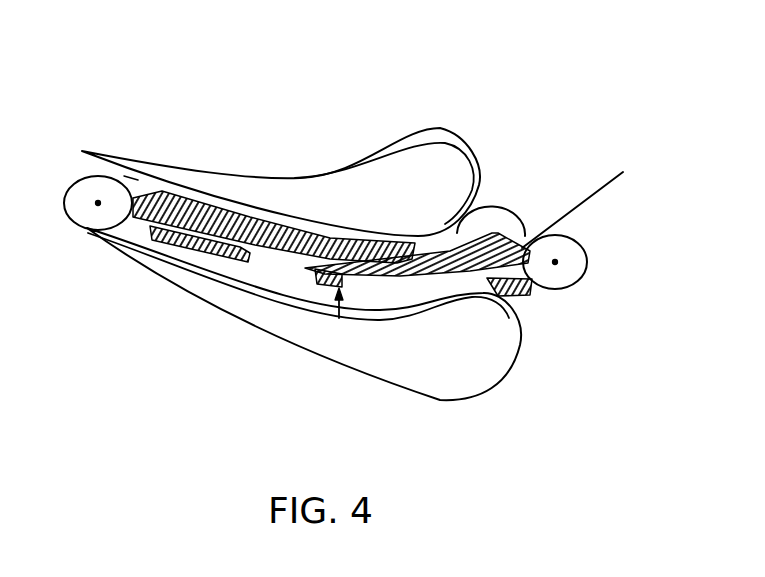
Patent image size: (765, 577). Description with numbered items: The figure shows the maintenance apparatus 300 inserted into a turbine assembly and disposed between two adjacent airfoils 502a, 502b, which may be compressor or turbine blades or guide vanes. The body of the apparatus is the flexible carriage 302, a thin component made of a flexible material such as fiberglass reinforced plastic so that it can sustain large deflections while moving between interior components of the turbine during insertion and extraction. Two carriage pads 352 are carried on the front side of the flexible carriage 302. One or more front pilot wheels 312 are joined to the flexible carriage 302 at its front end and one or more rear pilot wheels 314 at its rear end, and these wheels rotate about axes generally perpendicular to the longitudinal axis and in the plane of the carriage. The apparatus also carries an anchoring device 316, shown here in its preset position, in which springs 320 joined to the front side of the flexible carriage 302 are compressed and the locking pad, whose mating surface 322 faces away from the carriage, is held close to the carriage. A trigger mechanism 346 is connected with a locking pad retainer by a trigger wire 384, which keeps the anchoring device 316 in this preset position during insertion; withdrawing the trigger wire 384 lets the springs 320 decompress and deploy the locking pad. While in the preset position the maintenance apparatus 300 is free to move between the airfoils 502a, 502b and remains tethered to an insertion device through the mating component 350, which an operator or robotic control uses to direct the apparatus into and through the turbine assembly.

The maintenance apparatus 300 is at (500, 50).
The airfoil 502a is at (305, 190).
The airfoil 502b is at (390, 372).
The carriage pad 352 is at (360, 238).
The flexible carriage 302 is at (497, 248).
The front pilot wheel 312 is at (82, 206).
The rear pilot wheel 314 is at (585, 249).
The trigger wire 384 is at (597, 192).
The mating component 350 is at (530, 292).
The spring 320 is at (308, 272).
The mating surface 322 is at (330, 287).
The anchoring device 316 is at (338, 320).
The trigger mechanism 346 is at (345, 277).